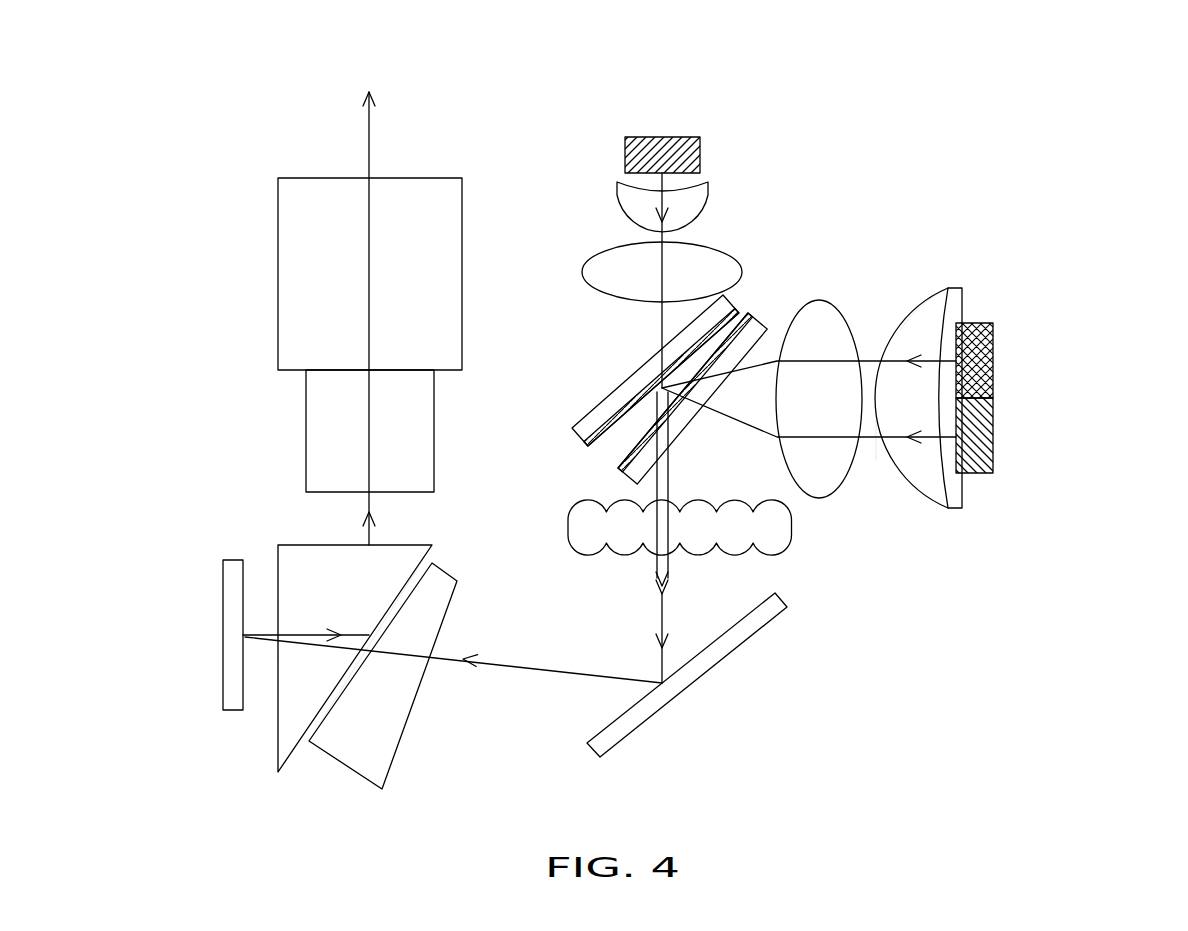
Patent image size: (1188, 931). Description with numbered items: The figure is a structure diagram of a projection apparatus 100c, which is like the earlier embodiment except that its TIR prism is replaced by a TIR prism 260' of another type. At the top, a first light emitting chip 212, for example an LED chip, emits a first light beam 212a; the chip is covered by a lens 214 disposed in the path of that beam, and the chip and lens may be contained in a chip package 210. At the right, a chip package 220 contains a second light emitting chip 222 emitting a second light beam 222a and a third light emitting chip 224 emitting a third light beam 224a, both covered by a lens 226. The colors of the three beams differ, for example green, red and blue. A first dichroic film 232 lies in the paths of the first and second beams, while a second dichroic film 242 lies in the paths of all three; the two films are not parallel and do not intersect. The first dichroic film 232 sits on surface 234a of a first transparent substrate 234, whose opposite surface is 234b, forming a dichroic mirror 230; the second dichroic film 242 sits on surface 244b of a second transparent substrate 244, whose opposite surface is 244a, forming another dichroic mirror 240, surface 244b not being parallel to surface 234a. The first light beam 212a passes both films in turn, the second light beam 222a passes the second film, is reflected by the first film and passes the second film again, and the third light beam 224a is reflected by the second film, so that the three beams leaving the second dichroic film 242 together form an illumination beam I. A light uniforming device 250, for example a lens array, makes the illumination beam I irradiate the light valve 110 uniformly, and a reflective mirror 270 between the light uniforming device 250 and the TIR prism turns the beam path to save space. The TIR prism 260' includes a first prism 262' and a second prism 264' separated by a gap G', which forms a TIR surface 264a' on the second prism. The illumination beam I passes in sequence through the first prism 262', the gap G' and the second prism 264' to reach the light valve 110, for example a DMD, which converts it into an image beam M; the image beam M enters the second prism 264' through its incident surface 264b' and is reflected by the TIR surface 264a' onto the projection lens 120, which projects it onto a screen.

The projection apparatus 100c is at (1176, 829).
The light valve 110 is at (230, 595).
The projection lens 120 is at (292, 283).
The chip package 210 is at (688, 127).
The first light emitting chip 212 is at (675, 148).
The first light beam 212a is at (658, 238).
The lens 214 is at (700, 200).
The chip package 220 is at (1018, 426).
The second light emitting chip 222 is at (980, 438).
The second light beam 222a is at (878, 445).
The third light emitting chip 224 is at (980, 364).
The third light beam 224a is at (905, 322).
The lens 226 is at (950, 497).
The dichroic mirror 230 is at (651, 318).
The first dichroic film 232 is at (742, 310).
The first transparent substrate 234 is at (733, 294).
The surface 234a is at (598, 437).
The surface 234b is at (647, 360).
The dichroic mirror 240 is at (715, 341).
The second dichroic film 242 is at (800, 314).
The second transparent substrate 244 is at (765, 332).
The surface 244a is at (689, 430).
The surface 244b is at (626, 442).
The light uniforming device 250 is at (778, 528).
The reflective mirror 270 is at (723, 650).
The TIR prism 260' is at (326, 695).
The first prism 262' is at (382, 699).
The second prism 264' is at (336, 690).
The TIR surface 264a' is at (373, 695).
The incident surface 264b' is at (210, 658).
The image beam M is at (275, 633).
The gap G' is at (409, 633).
The illumination beam I is at (505, 662).